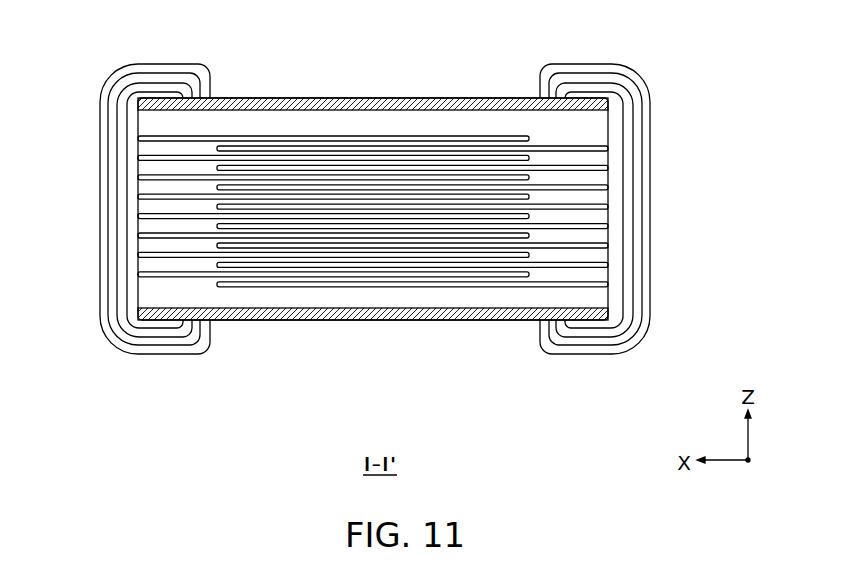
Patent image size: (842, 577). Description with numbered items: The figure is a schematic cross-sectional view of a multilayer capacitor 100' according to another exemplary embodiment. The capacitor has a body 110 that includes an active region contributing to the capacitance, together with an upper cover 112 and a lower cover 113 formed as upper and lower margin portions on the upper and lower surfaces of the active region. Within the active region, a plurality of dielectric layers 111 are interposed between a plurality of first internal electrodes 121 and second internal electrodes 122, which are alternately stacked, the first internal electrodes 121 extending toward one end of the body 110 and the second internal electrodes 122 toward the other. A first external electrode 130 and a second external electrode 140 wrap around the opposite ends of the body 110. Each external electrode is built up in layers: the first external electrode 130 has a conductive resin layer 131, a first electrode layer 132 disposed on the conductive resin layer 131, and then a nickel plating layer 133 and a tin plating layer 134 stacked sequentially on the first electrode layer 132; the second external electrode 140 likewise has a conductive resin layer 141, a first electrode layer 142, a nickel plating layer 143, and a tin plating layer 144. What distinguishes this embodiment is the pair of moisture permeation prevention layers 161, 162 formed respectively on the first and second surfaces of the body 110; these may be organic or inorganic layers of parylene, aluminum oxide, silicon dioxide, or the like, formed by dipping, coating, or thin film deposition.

The multilayer capacitor 100' is at (381, 226).
The body 110 is at (361, 321).
The dielectric layer 111 is at (594, 161).
The upper cover 112 is at (498, 122).
The lower cover 113 is at (443, 303).
The first internal electrode 121 is at (312, 136).
The second internal electrode 122 is at (427, 146).
The first external electrode 130 is at (155, 257).
The conductive resin layer 131 is at (170, 324).
The first electrode layer 132 is at (160, 336).
The nickel plating layer 133 is at (140, 343).
The tin plating layer 134 is at (133, 236).
The second external electrode 140 is at (591, 257).
The conductive resin layer 141 is at (568, 330).
The first electrode layer 142 is at (584, 336).
The nickel plating layer 143 is at (603, 344).
The tin plating layer 144 is at (616, 236).
The moisture permeation prevention layer 161 is at (243, 98).
The moisture permeation prevention layer 162 is at (291, 313).